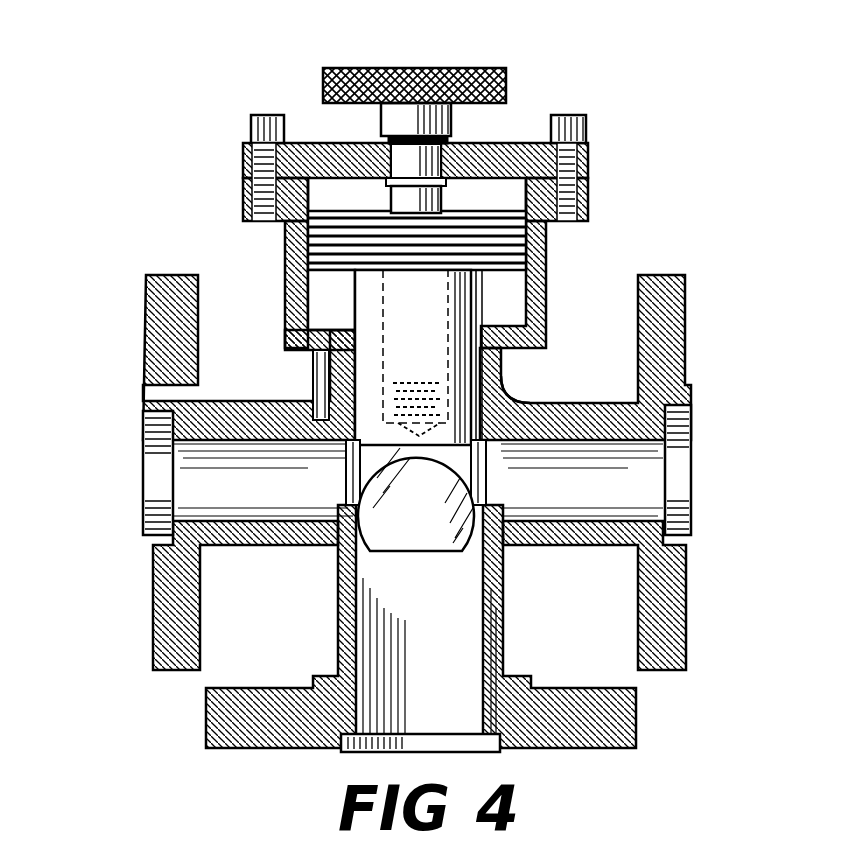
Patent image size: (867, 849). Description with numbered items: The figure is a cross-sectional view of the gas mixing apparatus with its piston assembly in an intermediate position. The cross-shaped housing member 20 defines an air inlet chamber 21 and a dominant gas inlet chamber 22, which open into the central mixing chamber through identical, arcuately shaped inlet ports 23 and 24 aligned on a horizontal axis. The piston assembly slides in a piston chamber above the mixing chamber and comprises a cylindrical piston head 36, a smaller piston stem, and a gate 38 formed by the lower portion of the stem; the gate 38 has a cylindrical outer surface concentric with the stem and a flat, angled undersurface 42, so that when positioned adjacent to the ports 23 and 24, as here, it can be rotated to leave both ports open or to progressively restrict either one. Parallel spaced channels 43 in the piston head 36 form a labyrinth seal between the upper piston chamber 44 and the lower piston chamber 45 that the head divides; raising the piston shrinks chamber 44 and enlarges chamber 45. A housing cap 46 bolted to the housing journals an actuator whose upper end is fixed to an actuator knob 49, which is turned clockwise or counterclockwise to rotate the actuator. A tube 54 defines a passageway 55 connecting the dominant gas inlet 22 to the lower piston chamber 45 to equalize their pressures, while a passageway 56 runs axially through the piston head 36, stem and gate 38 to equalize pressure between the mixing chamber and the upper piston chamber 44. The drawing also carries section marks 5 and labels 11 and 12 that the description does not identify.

The section line 5- 5 is at (797, 460).
The valve stem 11 is at (365, 170).
The bonnet 12 is at (528, 285).
The housing member 20 is at (198, 695).
The air inlet chamber 21 is at (598, 500).
The dominant gas inlet chamber 22 is at (170, 455).
The inlet port 23 is at (492, 458).
The inlet port 24 is at (340, 480).
The piston head 36 is at (283, 294).
The gate 38 is at (412, 545).
The angled undersurface 42 is at (430, 512).
The channels 43 is at (520, 250).
The upper piston chamber 44 is at (463, 190).
The lower piston chamber 45 is at (280, 328).
The housing cap 46 is at (335, 135).
The actuator knob 49 is at (382, 60).
The tube 54 is at (308, 363).
The passageway 55 is at (318, 322).
The passageway 56 is at (490, 402).